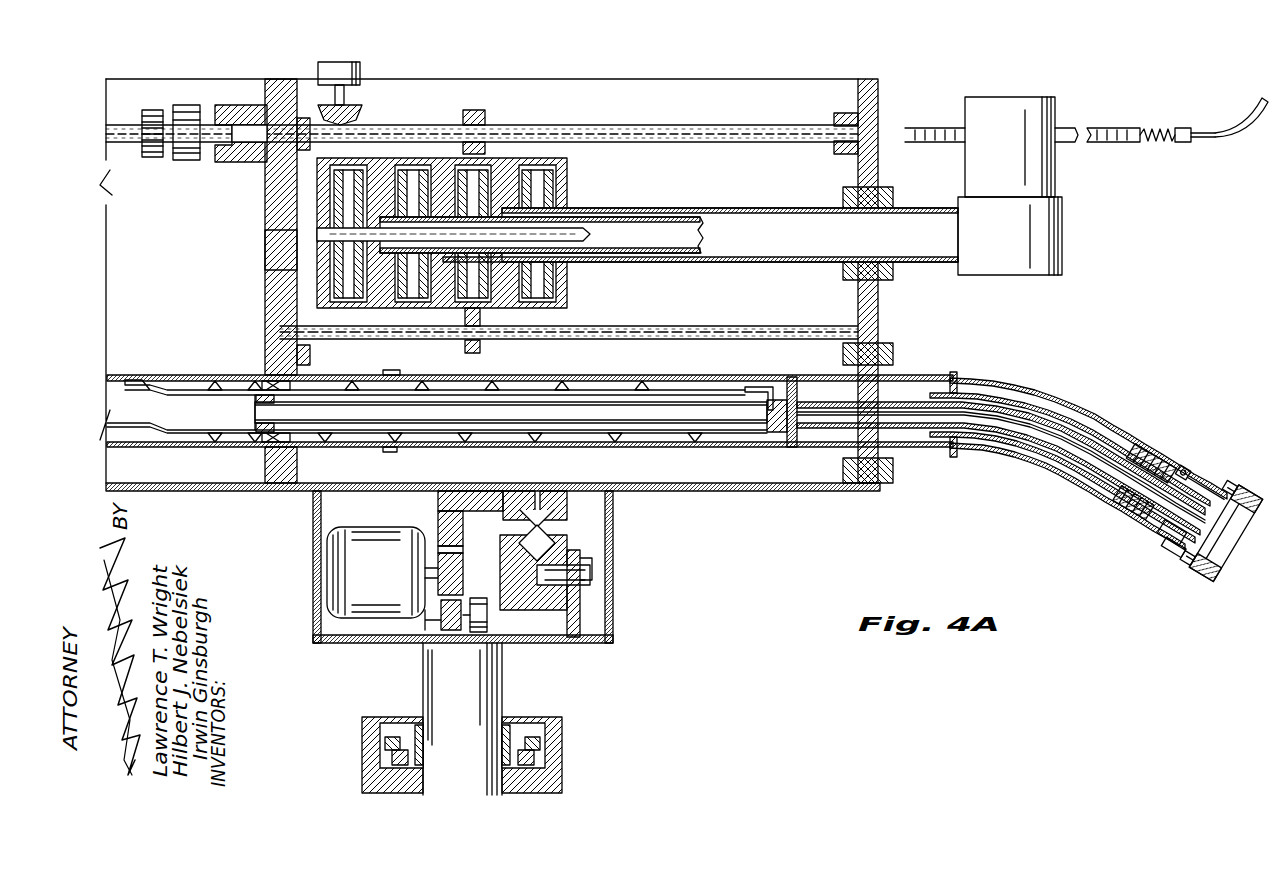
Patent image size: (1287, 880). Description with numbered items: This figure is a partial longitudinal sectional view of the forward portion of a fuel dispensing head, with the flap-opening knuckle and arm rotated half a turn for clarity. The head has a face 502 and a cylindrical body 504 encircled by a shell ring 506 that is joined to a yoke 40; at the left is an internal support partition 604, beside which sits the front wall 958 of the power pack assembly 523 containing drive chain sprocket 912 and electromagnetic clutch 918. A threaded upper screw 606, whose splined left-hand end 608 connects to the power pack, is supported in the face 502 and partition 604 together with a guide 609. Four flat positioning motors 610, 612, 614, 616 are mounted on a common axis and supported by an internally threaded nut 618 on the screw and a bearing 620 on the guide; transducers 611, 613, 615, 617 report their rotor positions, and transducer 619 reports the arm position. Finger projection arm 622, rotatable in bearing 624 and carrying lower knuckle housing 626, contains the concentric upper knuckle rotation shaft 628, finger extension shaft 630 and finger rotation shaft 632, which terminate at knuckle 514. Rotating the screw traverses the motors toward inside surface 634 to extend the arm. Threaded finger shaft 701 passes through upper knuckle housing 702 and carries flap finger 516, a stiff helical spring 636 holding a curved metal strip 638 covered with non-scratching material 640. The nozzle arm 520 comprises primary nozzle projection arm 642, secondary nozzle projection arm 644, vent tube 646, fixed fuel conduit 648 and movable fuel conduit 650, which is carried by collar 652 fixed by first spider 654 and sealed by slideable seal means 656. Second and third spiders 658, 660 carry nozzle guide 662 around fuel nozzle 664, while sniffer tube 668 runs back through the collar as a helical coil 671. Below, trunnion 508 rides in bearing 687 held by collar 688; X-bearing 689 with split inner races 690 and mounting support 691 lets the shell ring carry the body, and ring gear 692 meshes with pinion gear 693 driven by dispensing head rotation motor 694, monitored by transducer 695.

The yoke 40 is at (562, 745).
The face 502 is at (878, 84).
The cylindrical body 504 is at (760, 491).
The shell ring 506 is at (613, 585).
The trunnion 508 is at (503, 678).
The knuckle 514 is at (1076, 210).
The flap finger 516 is at (1105, 154).
The nozzle arm 520 is at (1080, 380).
The power pack assembly 523 is at (196, 302).
The internal support partition 604 is at (285, 79).
The upper screw 606 is at (628, 125).
The left-hand end of screw 608 is at (250, 150).
The guide 609 is at (685, 326).
The finger rotation motor 610 is at (335, 308).
The transducer 611 is at (340, 170).
The finger extension motor 612 is at (405, 308).
The transducer 613 is at (403, 170).
The knuckle rotation motor 614 is at (490, 308).
The transducer 615 is at (470, 170).
The finger projection arm motor 616 is at (560, 308).
The transducer 617 is at (535, 170).
The internally threaded nut 618 is at (478, 110).
The transducer 619 is at (360, 64).
The bearing 620 is at (480, 348).
The finger projection arm 622 is at (780, 208).
The bearing 624 is at (825, 263).
The lower knuckle housing 626 is at (1062, 250).
The upper knuckle rotation shaft 628 is at (705, 232).
The finger extension shaft 630 is at (592, 234).
The finger rotation shaft 632 is at (585, 212).
The inside surface of face 634 is at (858, 98).
The helical spring 636 is at (1156, 128).
The curved metal strip 638 is at (1205, 130).
The non-scratching material 640 is at (1230, 137).
The primary nozzle projection arm 642 is at (993, 378).
The secondary nozzle projection arm 644 is at (392, 370).
The vent tube 646 is at (330, 447).
The fixed fuel conduit 648 is at (240, 390).
The movable fuel conduit 650 is at (252, 414).
The collar 652 is at (773, 433).
The first spider 654 is at (800, 436).
The slideable seal means 656 is at (245, 433).
The second spider 658 is at (953, 372).
The third spider 660 is at (1083, 485).
The nozzle guide 662 is at (1020, 398).
The fuel nozzle 664 is at (1088, 430).
The sniffer tube 668 is at (775, 390).
The helical coil 671 is at (585, 375).
The bearing 687 is at (535, 758).
The collar 688 is at (540, 738).
The X-bearing 689 is at (567, 536).
The split inner races 690 is at (567, 503).
The mounting support 691 is at (585, 605).
The ring gear 692 is at (438, 507).
The pinion gear 693 is at (463, 580).
The dispensing head rotation motor 694 is at (398, 566).
The transducer 695 is at (487, 614).
The finger shaft 701 is at (918, 128).
The upper knuckle housing 702 is at (1012, 97).
The drive chain sprocket 912 is at (156, 160).
The electromagnetic clutch 918 is at (190, 105).
The front wall 958 is at (265, 256).